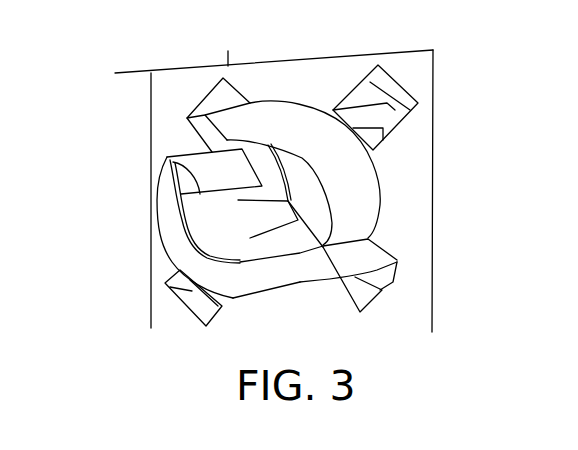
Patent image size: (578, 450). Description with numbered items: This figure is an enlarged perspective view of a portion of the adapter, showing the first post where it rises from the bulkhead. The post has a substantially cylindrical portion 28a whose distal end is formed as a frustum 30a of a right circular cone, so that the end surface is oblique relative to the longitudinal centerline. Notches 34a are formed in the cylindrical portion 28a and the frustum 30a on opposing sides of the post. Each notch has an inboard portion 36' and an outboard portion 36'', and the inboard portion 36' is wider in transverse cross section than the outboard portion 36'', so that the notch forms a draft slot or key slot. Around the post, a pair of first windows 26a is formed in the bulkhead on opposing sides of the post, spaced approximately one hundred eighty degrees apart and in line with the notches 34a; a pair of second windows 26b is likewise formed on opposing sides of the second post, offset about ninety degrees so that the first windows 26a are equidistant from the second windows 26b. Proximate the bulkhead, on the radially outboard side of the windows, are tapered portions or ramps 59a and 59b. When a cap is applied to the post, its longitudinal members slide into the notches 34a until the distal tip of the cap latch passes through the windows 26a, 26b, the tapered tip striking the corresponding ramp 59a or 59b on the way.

The first recesses or windows 26a is at (200, 95).
The second recesses or windows 26b is at (380, 110).
The cylindrical portion 28a is at (358, 177).
The frustum 30a is at (242, 283).
The notches 34a is at (302, 272).
The inboard portion 36' is at (184, 221).
The outboard portion 36'' is at (154, 154).
The tapered portion or ramp 59a is at (417, 115).
The tapered portion or ramp 59b is at (178, 303).